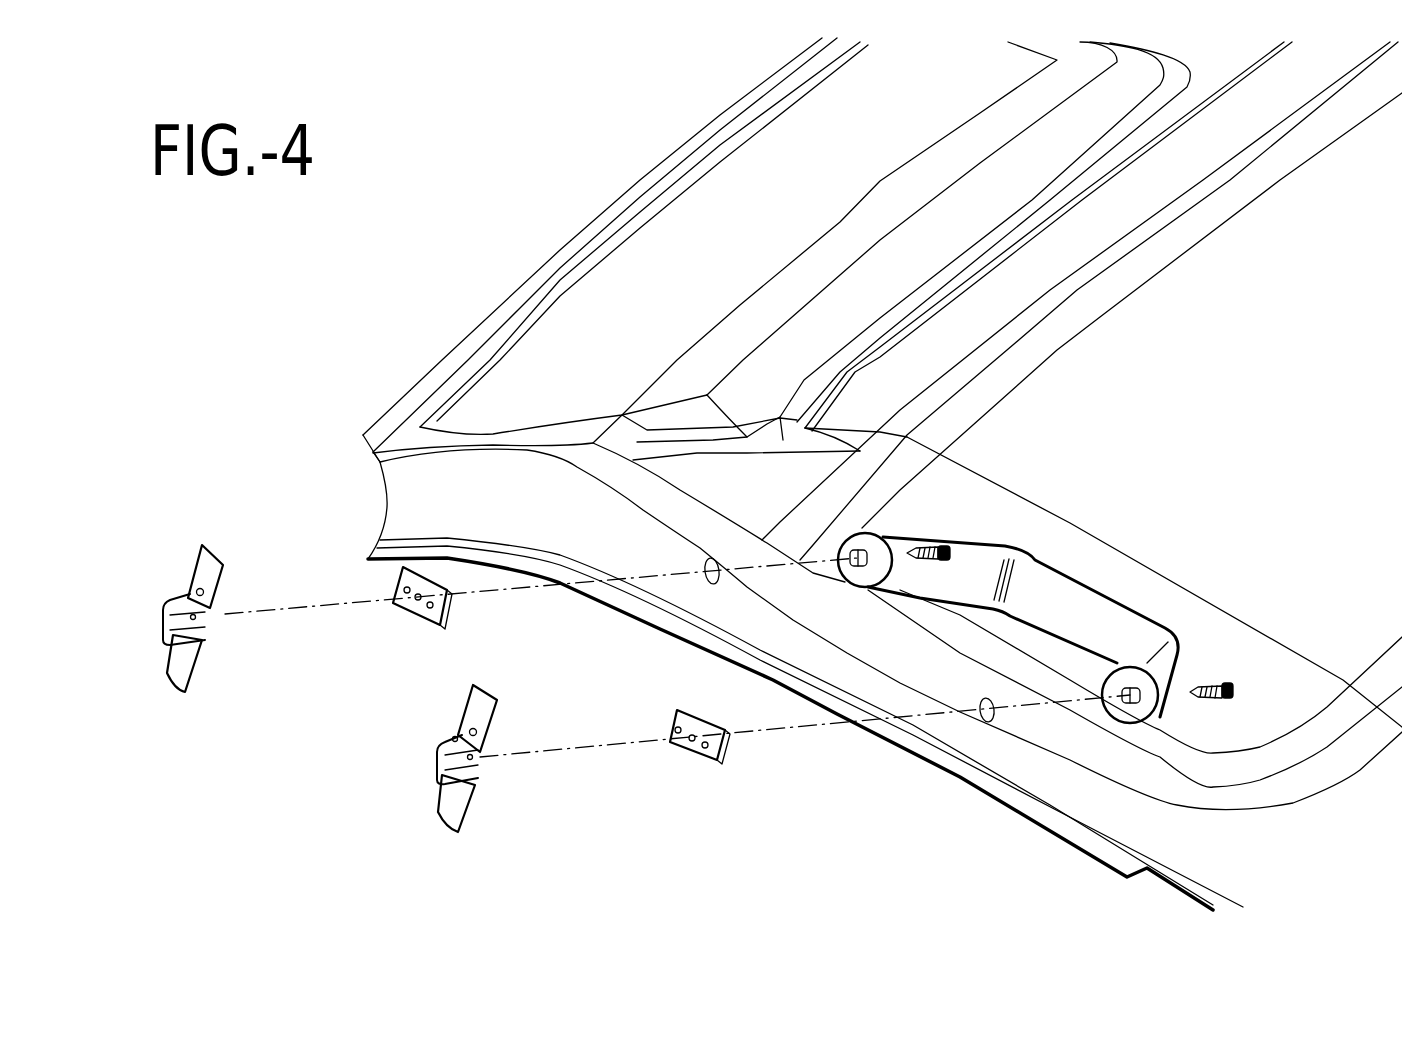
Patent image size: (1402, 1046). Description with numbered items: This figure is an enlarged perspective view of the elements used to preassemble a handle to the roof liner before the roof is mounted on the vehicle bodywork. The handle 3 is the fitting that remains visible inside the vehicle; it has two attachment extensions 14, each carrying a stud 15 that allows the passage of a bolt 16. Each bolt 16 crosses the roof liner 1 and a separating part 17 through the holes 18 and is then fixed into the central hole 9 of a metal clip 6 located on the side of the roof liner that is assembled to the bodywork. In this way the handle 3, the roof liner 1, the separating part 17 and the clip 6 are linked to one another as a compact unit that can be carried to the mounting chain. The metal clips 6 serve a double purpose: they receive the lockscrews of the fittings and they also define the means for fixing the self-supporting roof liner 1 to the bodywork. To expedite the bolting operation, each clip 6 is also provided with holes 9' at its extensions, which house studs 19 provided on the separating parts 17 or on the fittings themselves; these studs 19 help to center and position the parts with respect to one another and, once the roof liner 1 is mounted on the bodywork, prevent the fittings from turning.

The roof liner 1 is at (608, 297).
The handle 3 is at (1103, 627).
The metal clip 6 is at (198, 547).
The central hole 9 is at (370, 711).
The hole 9' is at (385, 674).
The attachment extension 14 is at (883, 537).
The stud 15 is at (857, 562).
The bolt 16 is at (943, 543).
The separating part 17 is at (430, 622).
The hole 18 is at (417, 596).
The stud 19 is at (428, 607).